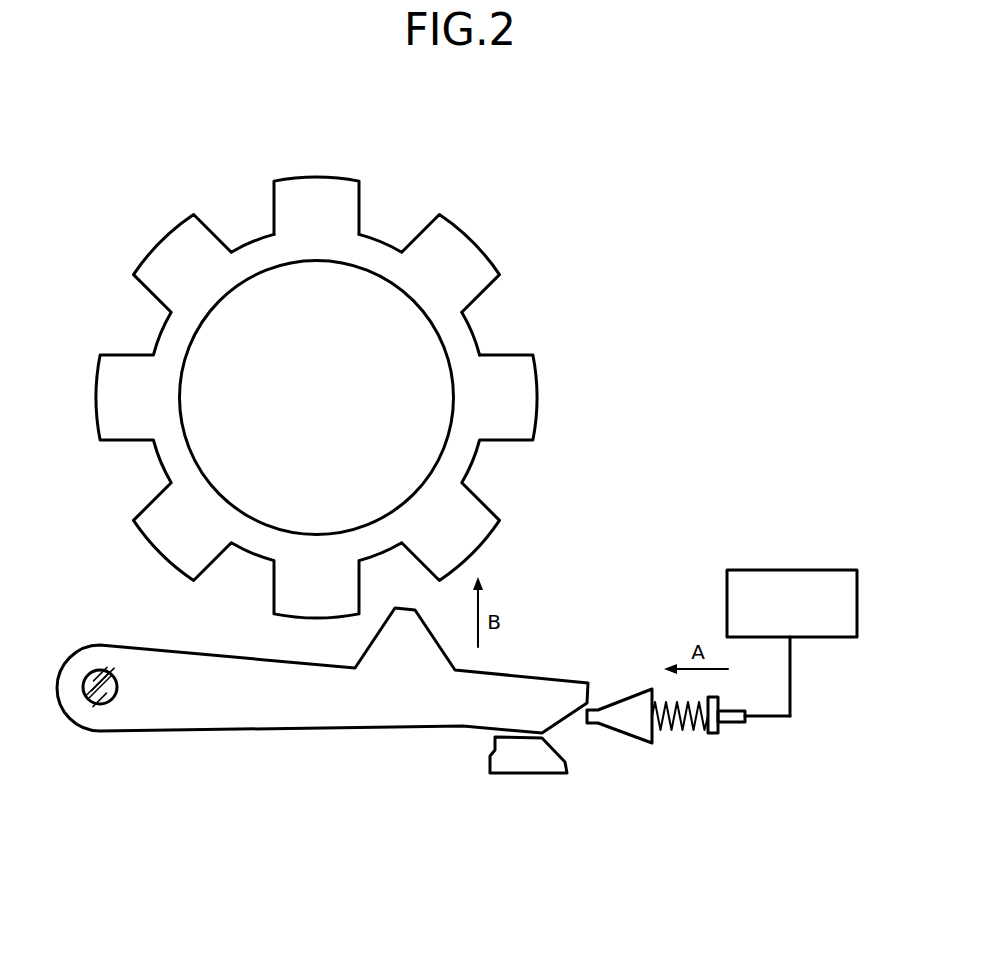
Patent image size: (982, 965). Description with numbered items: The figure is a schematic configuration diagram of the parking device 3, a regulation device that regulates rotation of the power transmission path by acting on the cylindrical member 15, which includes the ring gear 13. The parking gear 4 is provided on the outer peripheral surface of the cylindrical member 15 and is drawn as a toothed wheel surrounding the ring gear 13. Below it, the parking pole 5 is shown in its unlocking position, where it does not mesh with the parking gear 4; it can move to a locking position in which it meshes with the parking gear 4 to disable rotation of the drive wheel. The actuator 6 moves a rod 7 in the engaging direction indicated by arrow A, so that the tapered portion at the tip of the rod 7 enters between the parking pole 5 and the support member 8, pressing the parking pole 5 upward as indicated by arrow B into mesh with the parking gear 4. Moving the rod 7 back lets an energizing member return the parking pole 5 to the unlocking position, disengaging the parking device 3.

The parking device 3 is at (339, 363).
The parking gear 4 is at (319, 177).
The ring gear 13 is at (404, 293).
The cylindrical member 15 is at (486, 332).
The parking pole 5 is at (152, 745).
The actuator 6 is at (790, 570).
The rod 7 is at (732, 725).
The support member 8 is at (550, 775).